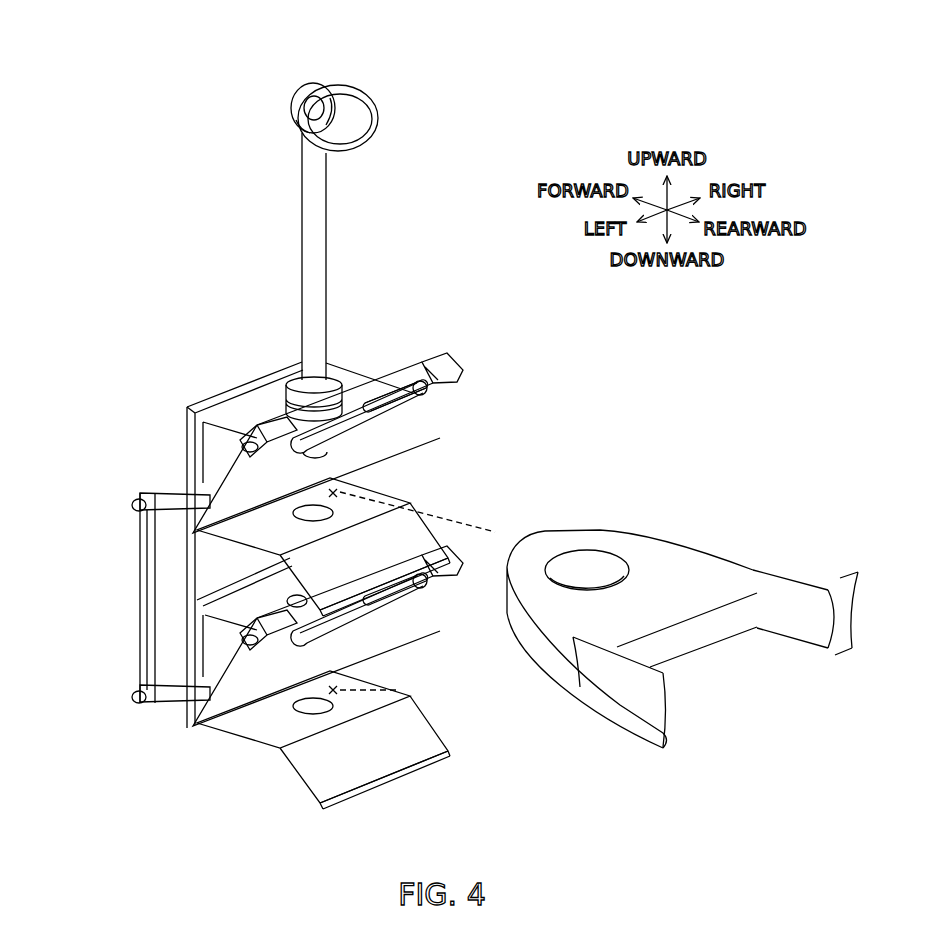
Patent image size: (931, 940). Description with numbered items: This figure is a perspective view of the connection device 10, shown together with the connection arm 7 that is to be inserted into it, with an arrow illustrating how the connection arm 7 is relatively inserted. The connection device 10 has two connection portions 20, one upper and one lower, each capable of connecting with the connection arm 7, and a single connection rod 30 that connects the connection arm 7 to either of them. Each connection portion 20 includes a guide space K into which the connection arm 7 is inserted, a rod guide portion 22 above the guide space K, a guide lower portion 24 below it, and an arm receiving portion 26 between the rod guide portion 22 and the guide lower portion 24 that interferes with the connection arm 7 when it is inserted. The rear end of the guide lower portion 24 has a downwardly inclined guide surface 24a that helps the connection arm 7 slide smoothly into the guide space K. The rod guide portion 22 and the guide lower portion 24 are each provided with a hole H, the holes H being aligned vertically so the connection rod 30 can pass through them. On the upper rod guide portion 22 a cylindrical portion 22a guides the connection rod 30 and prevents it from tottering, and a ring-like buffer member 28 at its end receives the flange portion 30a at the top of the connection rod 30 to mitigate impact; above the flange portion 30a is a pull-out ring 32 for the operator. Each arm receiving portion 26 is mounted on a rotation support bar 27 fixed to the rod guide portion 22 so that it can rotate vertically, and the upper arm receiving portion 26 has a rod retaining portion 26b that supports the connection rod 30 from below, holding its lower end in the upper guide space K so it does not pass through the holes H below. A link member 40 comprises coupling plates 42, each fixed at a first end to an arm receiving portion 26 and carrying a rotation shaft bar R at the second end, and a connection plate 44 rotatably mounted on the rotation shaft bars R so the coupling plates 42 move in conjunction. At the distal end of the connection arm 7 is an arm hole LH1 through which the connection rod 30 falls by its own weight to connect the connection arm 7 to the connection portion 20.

The connection arm 7 is at (673, 575).
The connection device 10 is at (170, 315).
The connection portion 20 is at (460, 463).
The rod guide portion 22 is at (352, 365).
The cylindrical portion 22a is at (288, 402).
The guide lower portion 24 is at (390, 498).
The guide surface 24a is at (410, 552).
The arm receiving portion 26 is at (367, 463).
The rod retaining portion 26b is at (357, 440).
The rotation support bar 27 is at (368, 397).
The buffer member 28 is at (290, 375).
The connection rod 30 is at (329, 228).
The flange portion 30a is at (292, 100).
The pull-out ring 32 is at (358, 100).
The link member 40 is at (122, 605).
The coupling plate 42 is at (170, 505).
The connection plate 44 is at (145, 602).
The hole H is at (297, 510).
The guide space K is at (358, 488).
The rotation shaft bar R is at (132, 503).
The arm hole LH1 is at (603, 567).